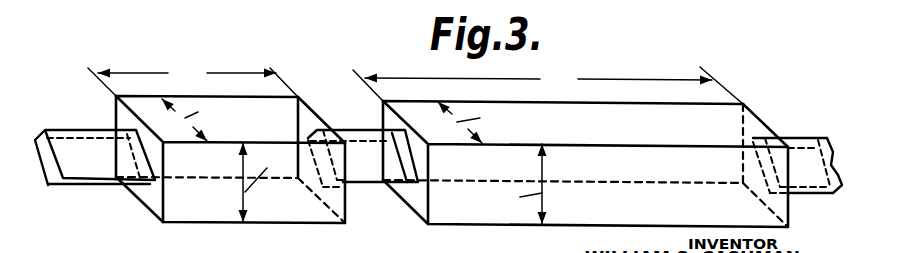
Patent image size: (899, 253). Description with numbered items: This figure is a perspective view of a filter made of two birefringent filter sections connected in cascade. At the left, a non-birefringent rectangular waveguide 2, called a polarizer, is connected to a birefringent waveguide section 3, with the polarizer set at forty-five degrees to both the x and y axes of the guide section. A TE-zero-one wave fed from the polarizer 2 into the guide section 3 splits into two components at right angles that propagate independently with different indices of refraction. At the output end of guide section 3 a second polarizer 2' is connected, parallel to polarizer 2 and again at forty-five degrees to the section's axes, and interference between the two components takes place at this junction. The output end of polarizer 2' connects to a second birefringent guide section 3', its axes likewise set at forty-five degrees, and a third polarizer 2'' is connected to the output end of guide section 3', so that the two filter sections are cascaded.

The non-birefringent rectangular waveguide 2 is at (95, 176).
The second polarizer 2' is at (363, 182).
The third polarizer 2'' is at (797, 141).
The birefringent waveguide section 3 is at (216, 155).
The birefringent guide section 3' is at (570, 158).